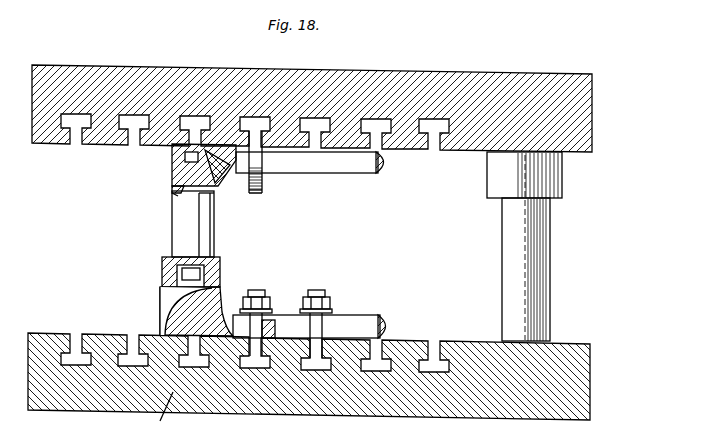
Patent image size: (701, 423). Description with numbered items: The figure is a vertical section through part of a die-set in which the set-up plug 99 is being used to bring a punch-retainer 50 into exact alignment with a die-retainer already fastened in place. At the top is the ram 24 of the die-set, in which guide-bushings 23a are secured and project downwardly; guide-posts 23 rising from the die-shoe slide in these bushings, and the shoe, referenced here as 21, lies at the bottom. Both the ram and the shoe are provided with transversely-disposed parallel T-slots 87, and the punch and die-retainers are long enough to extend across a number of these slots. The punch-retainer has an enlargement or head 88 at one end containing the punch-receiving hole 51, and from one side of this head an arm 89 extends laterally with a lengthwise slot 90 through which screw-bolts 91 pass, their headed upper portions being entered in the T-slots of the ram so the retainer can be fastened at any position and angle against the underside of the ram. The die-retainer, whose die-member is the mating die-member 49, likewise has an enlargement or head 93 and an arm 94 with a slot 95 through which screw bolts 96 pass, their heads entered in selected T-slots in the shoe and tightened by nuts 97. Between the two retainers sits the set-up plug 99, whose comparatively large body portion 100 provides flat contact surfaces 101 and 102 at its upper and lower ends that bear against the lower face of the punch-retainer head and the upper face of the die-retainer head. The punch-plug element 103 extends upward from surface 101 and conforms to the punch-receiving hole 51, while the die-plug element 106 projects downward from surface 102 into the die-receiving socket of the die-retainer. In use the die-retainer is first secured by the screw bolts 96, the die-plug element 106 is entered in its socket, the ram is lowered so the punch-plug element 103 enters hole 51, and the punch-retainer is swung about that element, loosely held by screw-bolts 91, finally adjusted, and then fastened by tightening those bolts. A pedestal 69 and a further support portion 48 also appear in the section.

The base plate 21 is at (600, 363).
The guide-posts 23 is at (510, 271).
The guide-bushings 23a is at (548, 181).
The ram 24 is at (198, 78).
The holder block 48 is at (164, 177).
The mating die-member 49 is at (162, 275).
The punch-retainer 50 is at (172, 182).
The punch-receiving hole 51 is at (173, 166).
The pedestal 69 is at (224, 292).
The T-slots 87 is at (258, 115).
The head 88 is at (170, 193).
The arm 89 is at (313, 173).
The slot 90 is at (353, 163).
The screw-bolts 91 is at (255, 197).
The head 93 is at (265, 295).
The arm 94 is at (382, 318).
The slot 95 is at (346, 320).
The screw bolts 96 is at (266, 324).
The nuts 97 is at (315, 290).
The set-up plug 99 is at (221, 239).
The body portion 100 is at (176, 241).
The flat contact surface 101 is at (214, 200).
The flat contact surface 102 is at (176, 264).
The punch-plug element 103 is at (216, 177).
The die-plug element 106 is at (180, 302).